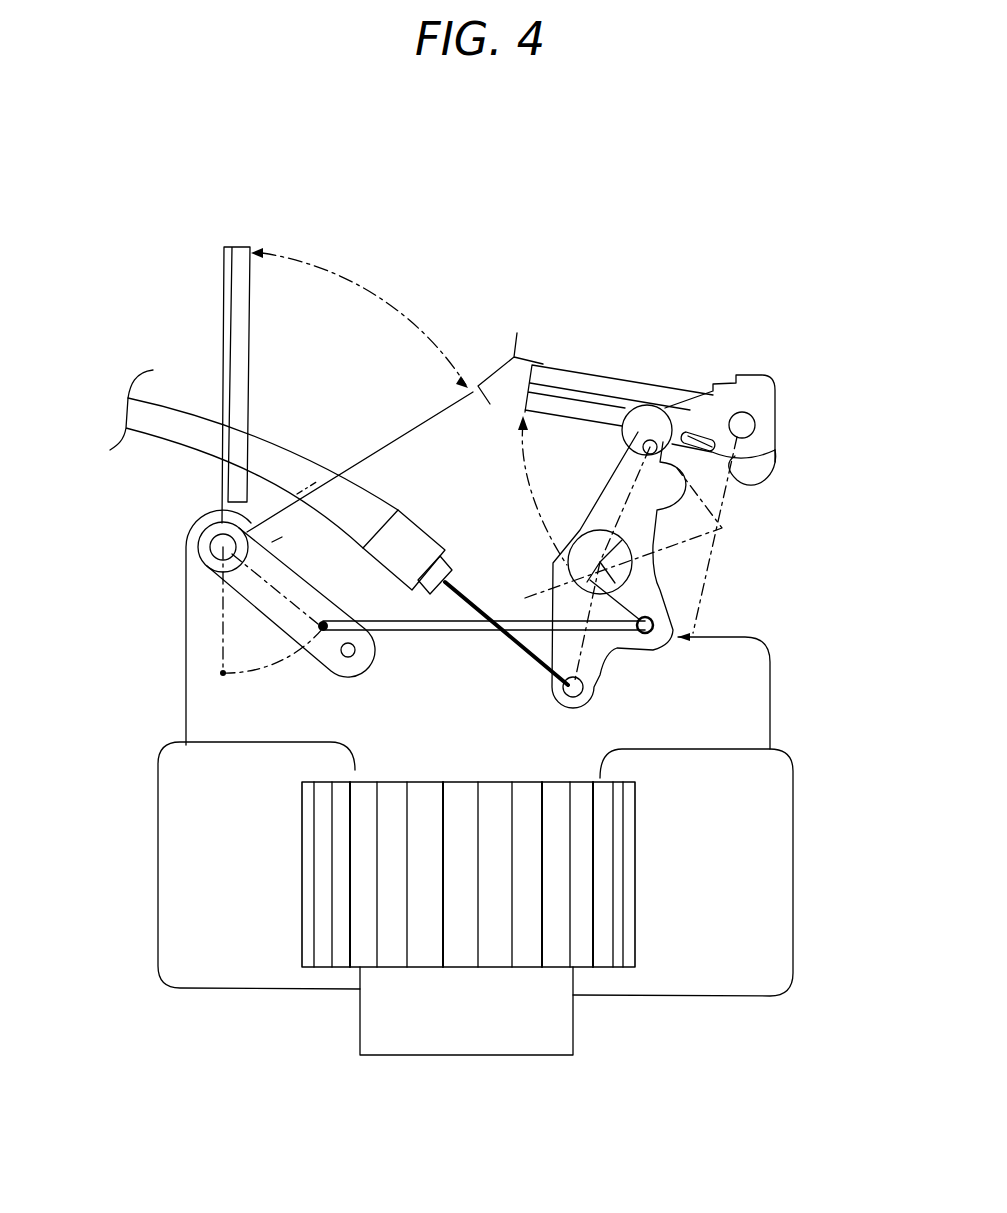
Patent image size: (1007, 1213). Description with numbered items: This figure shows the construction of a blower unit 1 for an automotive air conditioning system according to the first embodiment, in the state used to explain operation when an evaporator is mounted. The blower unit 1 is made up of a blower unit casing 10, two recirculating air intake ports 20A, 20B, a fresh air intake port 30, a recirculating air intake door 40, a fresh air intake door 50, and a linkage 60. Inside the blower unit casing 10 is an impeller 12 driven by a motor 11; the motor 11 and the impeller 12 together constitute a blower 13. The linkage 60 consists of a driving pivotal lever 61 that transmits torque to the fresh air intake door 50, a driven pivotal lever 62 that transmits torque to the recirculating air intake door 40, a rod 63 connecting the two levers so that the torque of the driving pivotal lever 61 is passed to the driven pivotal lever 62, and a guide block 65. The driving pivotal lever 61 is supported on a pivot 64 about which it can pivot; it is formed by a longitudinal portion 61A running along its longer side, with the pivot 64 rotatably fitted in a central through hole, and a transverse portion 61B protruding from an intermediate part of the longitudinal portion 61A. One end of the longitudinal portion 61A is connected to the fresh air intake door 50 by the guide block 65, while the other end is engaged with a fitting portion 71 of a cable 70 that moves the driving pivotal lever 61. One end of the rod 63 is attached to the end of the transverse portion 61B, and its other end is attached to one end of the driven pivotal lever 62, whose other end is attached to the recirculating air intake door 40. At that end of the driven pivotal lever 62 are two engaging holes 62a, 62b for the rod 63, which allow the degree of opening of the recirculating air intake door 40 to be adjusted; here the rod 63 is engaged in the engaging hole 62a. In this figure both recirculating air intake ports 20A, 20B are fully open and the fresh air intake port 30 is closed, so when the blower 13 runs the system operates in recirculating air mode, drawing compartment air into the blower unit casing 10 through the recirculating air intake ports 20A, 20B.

The blower unit 1 is at (790, 396).
The blower unit casing 10 is at (790, 733).
The motor 11 is at (576, 1040).
The impeller 12 is at (638, 902).
The blower 13 is at (520, 973).
The recirculating air intake port 20A is at (768, 642).
The recirculating air intake port 20B is at (450, 368).
The fresh air intake port 30 is at (548, 364).
The recirculating air intake door 40 is at (220, 323).
The fresh air intake door 50 is at (643, 382).
The linkage 60 is at (698, 484).
The driving pivotal lever 61 is at (698, 573).
The longitudinal portion 61A is at (660, 522).
The transverse portion 61B is at (668, 651).
The driven pivotal lever 62 is at (220, 669).
The engaging hole 62a is at (320, 632).
The engaging hole 62b is at (338, 652).
The rod 63 is at (398, 634).
The pivot 64 is at (632, 578).
The guide block 65 is at (775, 478).
The cable 70 is at (178, 456).
The fitting portion 71 is at (560, 690).